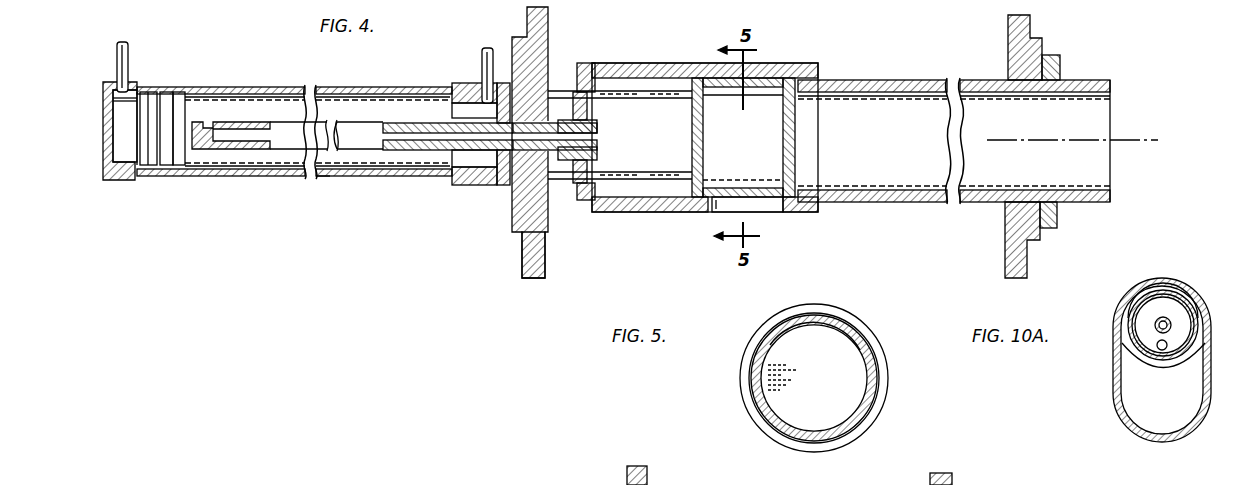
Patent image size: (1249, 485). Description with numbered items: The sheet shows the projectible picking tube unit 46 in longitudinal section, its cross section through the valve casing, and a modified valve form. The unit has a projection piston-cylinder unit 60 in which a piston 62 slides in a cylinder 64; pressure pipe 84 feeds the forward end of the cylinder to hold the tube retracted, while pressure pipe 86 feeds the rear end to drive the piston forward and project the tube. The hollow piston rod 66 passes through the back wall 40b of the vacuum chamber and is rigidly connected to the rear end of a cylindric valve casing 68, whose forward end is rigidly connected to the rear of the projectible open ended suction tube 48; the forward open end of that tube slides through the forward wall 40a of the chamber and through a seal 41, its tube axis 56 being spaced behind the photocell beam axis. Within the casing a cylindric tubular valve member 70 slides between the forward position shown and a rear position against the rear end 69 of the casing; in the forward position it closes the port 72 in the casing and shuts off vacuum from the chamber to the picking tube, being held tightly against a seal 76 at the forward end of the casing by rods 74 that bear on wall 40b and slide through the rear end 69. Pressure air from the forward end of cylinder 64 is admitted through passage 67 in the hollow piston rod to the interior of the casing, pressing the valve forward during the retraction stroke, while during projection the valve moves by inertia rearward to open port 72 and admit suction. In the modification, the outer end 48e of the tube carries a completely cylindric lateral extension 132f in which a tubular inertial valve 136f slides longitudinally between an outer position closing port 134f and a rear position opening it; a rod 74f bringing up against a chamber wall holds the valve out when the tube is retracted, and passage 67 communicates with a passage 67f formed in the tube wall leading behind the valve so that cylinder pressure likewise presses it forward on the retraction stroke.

In FIG. 4, the pressure pipe 86 is at (116, 57).
In FIG. 4, the piston 62 is at (180, 170).
In FIG. 4, the cylinder 64 is at (250, 86).
In FIG. 4, the projection piston-cylinder unit 60 is at (320, 178).
In FIG. 4, the piston rod 66 is at (420, 151).
In FIG. 4, the passage 67 is at (406, 128).
In FIG. 4, the pressure pipe 84 is at (481, 58).
In FIG. 4, the back wall 40b is at (546, 250).
In FIG. 4, the forward wall 40a is at (1007, 40).
In FIG. 4, the seal 41 is at (1062, 68).
In FIG. 4, the rear end of casing 69 is at (596, 115).
In FIG. 4, the rods 74 is at (629, 92).
In FIG. 4, the cylindric valve casing 68 is at (661, 68).
In FIG. 5, the cylindric valve casing 68 is at (852, 320).
In FIG. 4, the projectible picking tube unit 46 is at (686, 63).
In FIG. 5, the projectible picking tube unit 46 is at (855, 305).
In FIG. 4, the tubular valve member 70 is at (767, 74).
In FIG. 5, the tubular valve member 70 is at (868, 375).
In FIG. 4, the port 72 is at (770, 211).
In FIG. 5, the port 72 is at (864, 340).
In FIG. 4, the seal 76 is at (820, 78).
In FIG. 4, the projectible open ended suction tube 48 is at (937, 203).
In FIG. 4, the tube axis 56 is at (1136, 143).
In FIG. 10A, the outer end of tube 48e is at (1170, 433).
In FIG. 10A, the passage 67f is at (1150, 345).
In FIG. 10A, the rod 74f is at (1163, 316).
In FIG. 10A, the port 134f is at (1165, 366).
In FIG. 10A, the lateral extension 132f is at (1172, 296).
In FIG. 10A, the tubular inertial valve 136f is at (1200, 312).